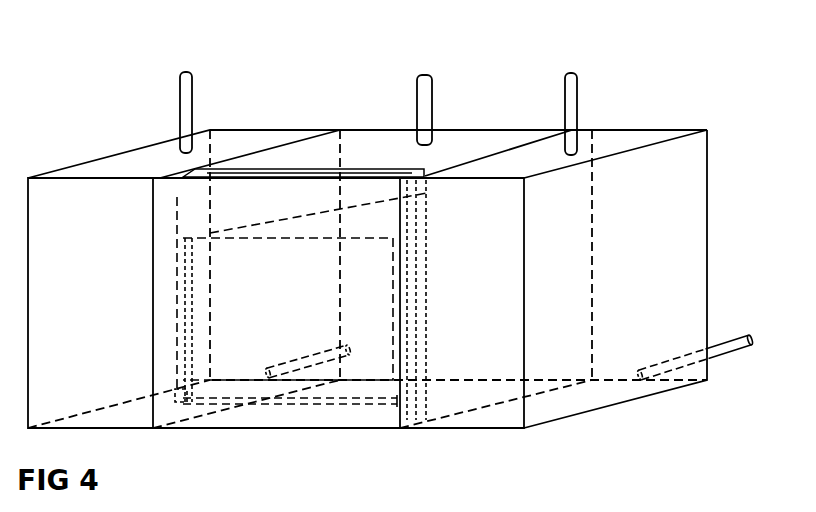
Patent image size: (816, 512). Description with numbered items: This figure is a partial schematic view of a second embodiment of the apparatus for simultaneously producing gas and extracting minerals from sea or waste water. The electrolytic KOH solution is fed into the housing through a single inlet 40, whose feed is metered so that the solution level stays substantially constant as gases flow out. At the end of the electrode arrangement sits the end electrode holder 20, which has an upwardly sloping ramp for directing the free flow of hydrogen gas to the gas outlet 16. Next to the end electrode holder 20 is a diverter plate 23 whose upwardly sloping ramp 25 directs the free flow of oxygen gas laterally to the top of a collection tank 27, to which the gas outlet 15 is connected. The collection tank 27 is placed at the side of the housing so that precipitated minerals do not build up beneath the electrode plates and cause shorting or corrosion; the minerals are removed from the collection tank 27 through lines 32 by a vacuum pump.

The collection tank 27 is at (142, 168).
The gas outlet 16 is at (184, 96).
The ramp 25 is at (314, 212).
The end electrode holder 20 is at (373, 230).
The inlet 40 is at (430, 98).
The gas outlet 15 is at (575, 101).
The line 32 is at (312, 356).
The diverter plate 23 is at (345, 404).